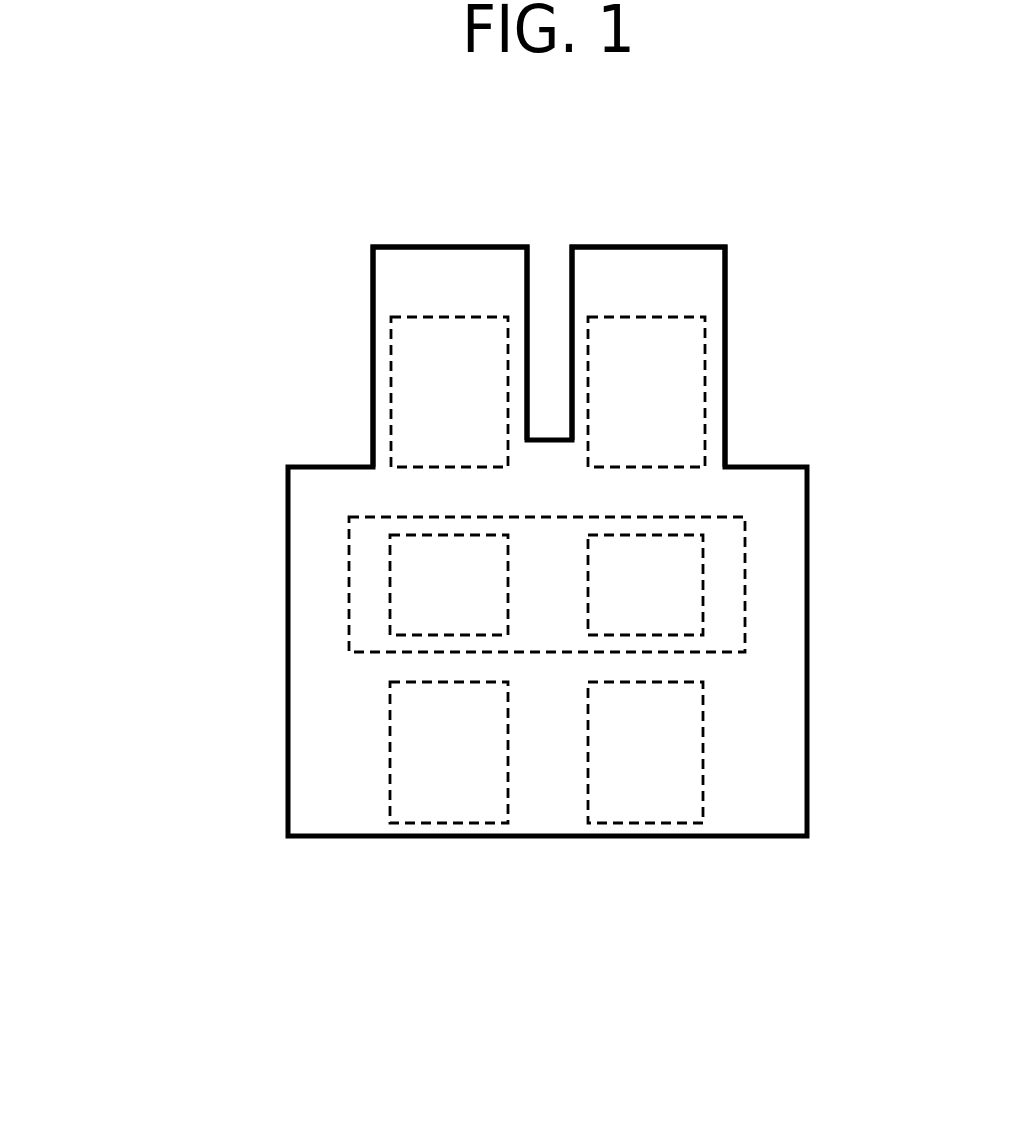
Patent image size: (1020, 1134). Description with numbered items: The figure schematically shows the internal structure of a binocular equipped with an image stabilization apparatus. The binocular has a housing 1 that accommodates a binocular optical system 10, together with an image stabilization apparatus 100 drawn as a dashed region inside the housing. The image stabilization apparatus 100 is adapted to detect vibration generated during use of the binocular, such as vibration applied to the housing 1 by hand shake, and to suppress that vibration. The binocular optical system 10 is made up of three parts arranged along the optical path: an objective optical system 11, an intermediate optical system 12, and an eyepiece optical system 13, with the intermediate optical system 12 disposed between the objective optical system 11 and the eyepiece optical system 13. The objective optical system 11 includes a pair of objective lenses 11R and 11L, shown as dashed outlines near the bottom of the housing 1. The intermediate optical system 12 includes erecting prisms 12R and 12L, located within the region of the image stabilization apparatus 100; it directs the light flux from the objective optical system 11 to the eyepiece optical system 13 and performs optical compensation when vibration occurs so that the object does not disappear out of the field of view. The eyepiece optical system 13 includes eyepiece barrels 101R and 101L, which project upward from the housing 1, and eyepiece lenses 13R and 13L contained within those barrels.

The housing 1 is at (808, 645).
The image stabilization apparatus 100 is at (745, 548).
The eyepiece barrel 101R is at (383, 282).
The eyepiece barrel 101L is at (710, 282).
The binocular optical system 10 is at (100, 410).
The objective optical system 11 is at (165, 812).
The objective lens 11R is at (412, 793).
The objective lens 11L is at (613, 798).
The intermediate optical system 12 is at (165, 623).
The erecting prism 12R is at (415, 597).
The erecting prism 12L is at (627, 607).
The eyepiece optical system 13 is at (165, 430).
The eyepiece lens 13R is at (408, 408).
The eyepiece lens 13L is at (620, 447).